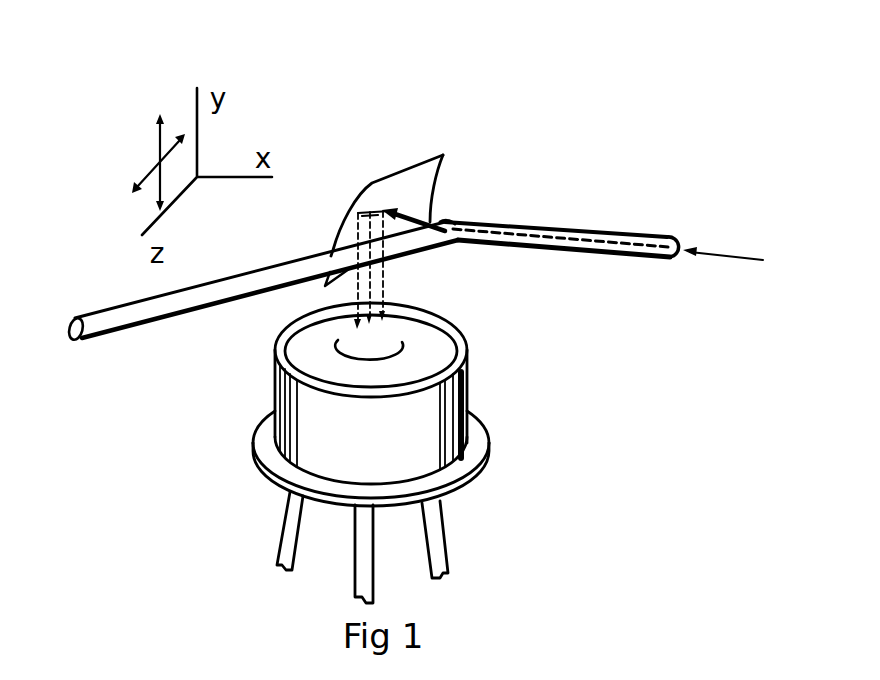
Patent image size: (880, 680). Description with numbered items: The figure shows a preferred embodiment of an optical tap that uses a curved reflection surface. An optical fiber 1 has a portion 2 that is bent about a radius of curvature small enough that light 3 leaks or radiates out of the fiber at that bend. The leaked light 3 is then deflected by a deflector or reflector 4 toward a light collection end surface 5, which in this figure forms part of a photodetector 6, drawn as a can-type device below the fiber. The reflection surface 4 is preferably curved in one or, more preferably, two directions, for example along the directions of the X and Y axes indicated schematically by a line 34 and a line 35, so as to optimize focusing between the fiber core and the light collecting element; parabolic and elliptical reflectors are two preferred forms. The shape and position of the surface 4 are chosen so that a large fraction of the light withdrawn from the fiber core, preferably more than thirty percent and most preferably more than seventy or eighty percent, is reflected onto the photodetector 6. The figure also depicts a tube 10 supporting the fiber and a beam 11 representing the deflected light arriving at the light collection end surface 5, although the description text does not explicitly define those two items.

The optical fiber 1 is at (622, 232).
The bent portion 2 is at (467, 222).
The light 3 is at (430, 223).
The reflector 4 is at (440, 155).
The light collection end surface 5 is at (397, 336).
The photodetector 6 is at (472, 438).
The guide tube 10 is at (275, 268).
The light beam 11 is at (387, 323).
The line 34 is at (158, 142).
The line 35 is at (155, 167).